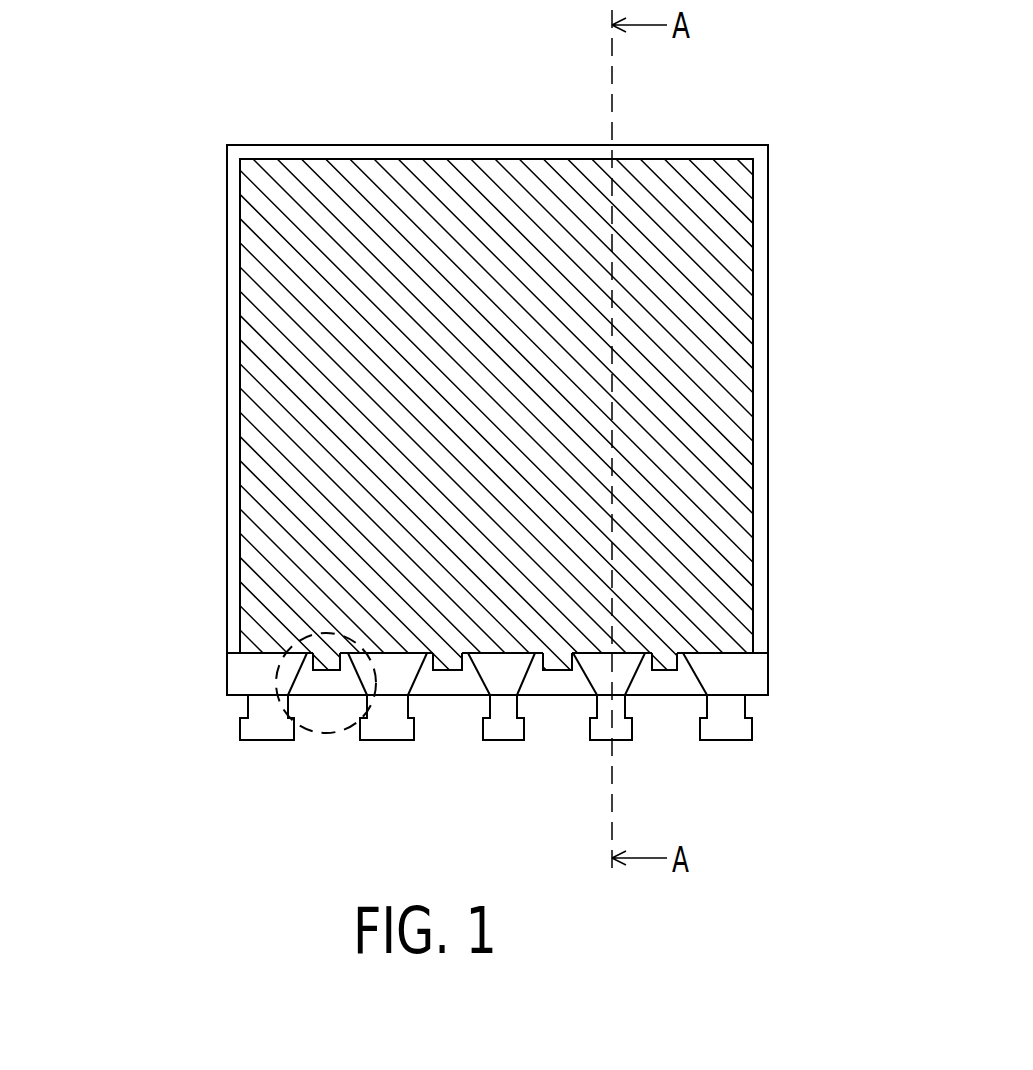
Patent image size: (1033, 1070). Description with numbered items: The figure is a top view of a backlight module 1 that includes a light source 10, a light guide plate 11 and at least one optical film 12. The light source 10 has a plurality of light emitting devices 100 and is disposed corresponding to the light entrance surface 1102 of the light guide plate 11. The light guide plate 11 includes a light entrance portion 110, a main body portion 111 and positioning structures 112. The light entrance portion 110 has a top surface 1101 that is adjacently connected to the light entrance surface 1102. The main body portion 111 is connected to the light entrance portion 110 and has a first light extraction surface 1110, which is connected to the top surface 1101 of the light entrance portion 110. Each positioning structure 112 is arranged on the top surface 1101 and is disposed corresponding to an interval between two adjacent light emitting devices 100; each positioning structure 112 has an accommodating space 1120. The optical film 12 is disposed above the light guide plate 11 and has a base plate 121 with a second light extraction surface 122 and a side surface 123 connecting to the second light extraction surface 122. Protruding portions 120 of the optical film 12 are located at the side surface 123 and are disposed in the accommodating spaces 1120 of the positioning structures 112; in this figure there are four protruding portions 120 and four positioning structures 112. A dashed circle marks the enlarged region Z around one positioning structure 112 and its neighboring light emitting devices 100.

The backlight module 1 is at (850, 153).
The optical film 12 is at (108, 252).
The protruding portion 120 is at (325, 662).
The base plate 121 is at (257, 394).
The second light extraction surface 122 is at (248, 283).
The side surface 123 is at (392, 641).
The light guide plate 11 is at (90, 530).
The light entrance portion 110 is at (428, 477).
The main body portion 111 is at (237, 610).
The first light extraction surface 1110 is at (226, 562).
The top surface 1101 is at (232, 676).
The light entrance surface 1102 is at (325, 712).
The positioning structure 112 is at (571, 671).
The accommodating space 1120 is at (679, 648).
The light emitting devices 100 is at (496, 749).
The light source 10 is at (498, 740).
The enlarged region Z is at (325, 733).